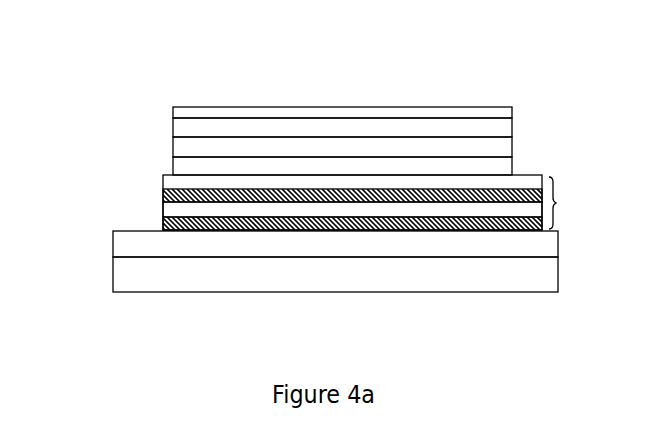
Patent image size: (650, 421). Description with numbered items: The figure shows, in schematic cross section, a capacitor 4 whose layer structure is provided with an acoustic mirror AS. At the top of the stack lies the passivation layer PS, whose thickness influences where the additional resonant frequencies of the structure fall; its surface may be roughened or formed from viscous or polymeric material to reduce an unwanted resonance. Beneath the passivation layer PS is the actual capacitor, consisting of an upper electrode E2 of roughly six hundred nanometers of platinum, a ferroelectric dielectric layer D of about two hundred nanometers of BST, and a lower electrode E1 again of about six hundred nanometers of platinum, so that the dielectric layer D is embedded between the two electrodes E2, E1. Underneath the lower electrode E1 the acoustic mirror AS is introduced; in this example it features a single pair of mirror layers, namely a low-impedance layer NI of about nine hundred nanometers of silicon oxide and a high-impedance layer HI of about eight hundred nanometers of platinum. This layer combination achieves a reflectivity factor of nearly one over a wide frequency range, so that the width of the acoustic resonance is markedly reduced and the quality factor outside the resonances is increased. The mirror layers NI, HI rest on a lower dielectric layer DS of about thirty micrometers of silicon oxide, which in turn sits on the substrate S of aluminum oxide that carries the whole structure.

The layered structure 4 is at (30, 48).
The passivation layer PS is at (267, 107).
The upper electrode E2 is at (310, 130).
The dielectric layer D is at (358, 145).
The lower electrode E1 is at (238, 168).
The acoustic mirror AS is at (388, 202).
The low-impedance layer NI is at (181, 182).
The high-impedance layer HI is at (175, 210).
The lower dielectric layer DS is at (126, 240).
The substrate S is at (131, 280).